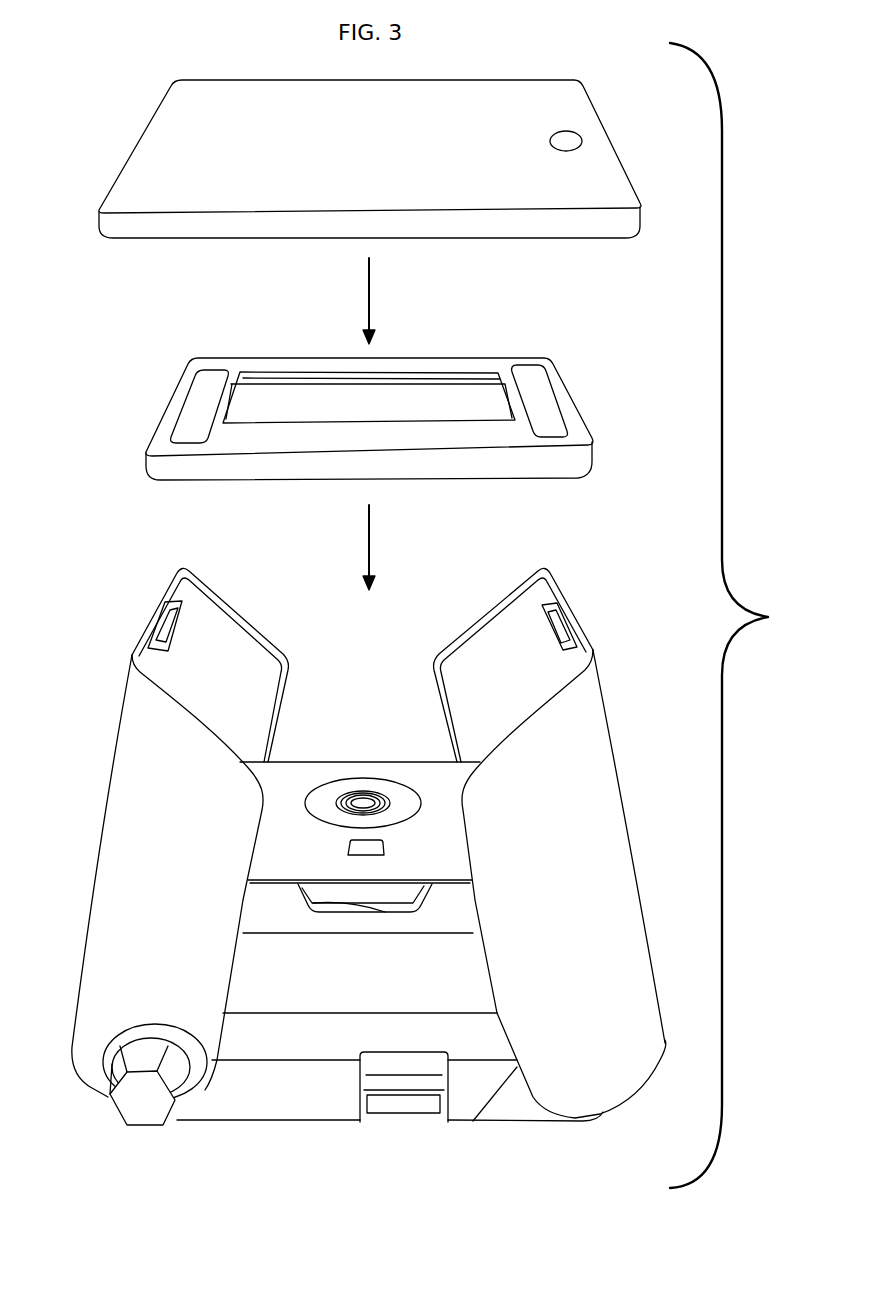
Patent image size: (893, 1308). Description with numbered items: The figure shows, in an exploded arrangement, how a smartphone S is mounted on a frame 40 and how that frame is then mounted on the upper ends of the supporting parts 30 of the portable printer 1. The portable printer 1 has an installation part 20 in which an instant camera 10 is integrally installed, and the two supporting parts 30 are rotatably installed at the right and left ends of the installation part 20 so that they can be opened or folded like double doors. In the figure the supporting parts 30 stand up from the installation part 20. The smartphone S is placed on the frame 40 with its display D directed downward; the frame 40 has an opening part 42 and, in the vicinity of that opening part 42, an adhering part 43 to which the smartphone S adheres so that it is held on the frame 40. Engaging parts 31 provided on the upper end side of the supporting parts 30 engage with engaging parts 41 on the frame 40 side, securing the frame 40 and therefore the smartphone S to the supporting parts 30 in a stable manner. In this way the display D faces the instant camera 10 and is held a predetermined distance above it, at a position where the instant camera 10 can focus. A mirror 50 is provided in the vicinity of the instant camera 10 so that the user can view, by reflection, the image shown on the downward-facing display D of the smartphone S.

The portable printer 1 is at (370, 860).
The instant camera 10 is at (360, 795).
The installation part 20 is at (335, 990).
The supporting part 30 is at (370, 833).
The engaging part 31 is at (173, 618).
The frame 40 is at (370, 398).
The engaging part 41 is at (157, 425).
The opening part 42 is at (442, 393).
The adhering part 43 is at (195, 390).
The mirror 50 is at (365, 848).
The smartphone S is at (483, 92).
The display D is at (243, 199).